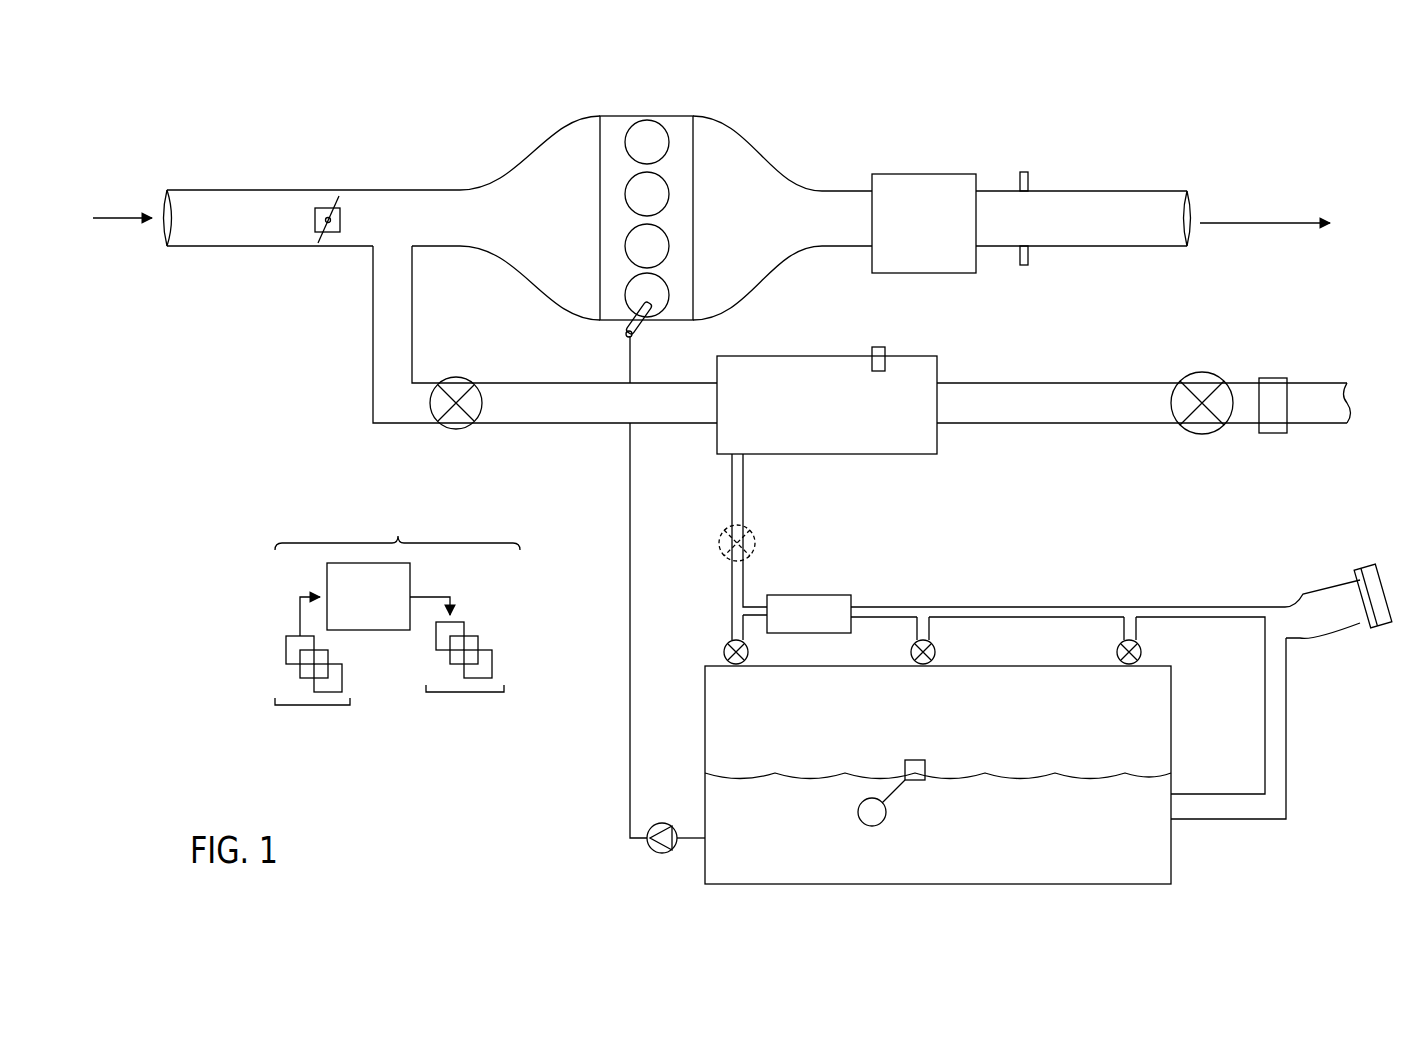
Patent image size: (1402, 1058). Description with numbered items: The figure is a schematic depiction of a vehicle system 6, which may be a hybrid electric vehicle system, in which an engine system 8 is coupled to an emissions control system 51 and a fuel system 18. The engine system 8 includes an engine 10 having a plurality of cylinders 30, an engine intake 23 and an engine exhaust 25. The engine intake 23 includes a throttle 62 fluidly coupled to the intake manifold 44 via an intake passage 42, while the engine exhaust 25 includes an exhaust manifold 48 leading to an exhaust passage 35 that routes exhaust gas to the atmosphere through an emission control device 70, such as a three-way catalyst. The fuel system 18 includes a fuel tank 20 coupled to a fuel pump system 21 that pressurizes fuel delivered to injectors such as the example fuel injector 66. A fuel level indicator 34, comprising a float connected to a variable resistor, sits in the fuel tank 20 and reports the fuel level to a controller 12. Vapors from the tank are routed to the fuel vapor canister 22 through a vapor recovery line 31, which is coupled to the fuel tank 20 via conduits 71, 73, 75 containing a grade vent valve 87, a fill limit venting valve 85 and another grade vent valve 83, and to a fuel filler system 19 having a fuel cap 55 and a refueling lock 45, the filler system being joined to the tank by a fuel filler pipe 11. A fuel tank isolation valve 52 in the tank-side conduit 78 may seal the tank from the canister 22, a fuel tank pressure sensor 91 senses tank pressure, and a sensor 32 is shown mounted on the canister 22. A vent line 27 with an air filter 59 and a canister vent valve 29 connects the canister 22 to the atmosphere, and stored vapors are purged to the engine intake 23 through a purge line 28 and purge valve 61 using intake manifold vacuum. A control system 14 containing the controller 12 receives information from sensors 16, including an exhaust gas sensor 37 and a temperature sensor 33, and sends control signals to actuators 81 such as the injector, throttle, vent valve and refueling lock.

The vehicle system 6 is at (182, 121).
The engine system 8 is at (990, 117).
The engine 10 is at (695, 204).
The fuel filler pipe 11 is at (1292, 714).
The controller 12 is at (368, 596).
The control system 14 is at (397, 521).
The sensors 16 is at (312, 674).
The fuel system 18 is at (1224, 836).
The fuel filler system 19 is at (1338, 572).
The fuel tank 20 is at (1171, 765).
The fuel pump system 21 is at (662, 823).
The fuel vapor canister 22 is at (940, 378).
The engine intake 23 is at (527, 143).
The engine exhaust 25 is at (862, 125).
The vent line 27 is at (1144, 403).
The purge line 28 is at (545, 334).
The canister vent valve 29 is at (1202, 372).
The cylinders 30 is at (667, 136).
The vapor recovery line 31 is at (1190, 607).
The temperature sensor 32 is at (876, 347).
The temperature sensor 33 is at (1019, 258).
The fuel level indicator 34 is at (918, 758).
The exhaust passage 35 is at (1140, 191).
The exhaust gas sensor 37 is at (1019, 186).
The intake passage 42 is at (363, 250).
The intake manifold 44 is at (530, 218).
The refueling lock 45 is at (1369, 627).
The exhaust manifold 48 is at (782, 218).
The emissions control system 51 is at (1331, 336).
The fuel tank isolation valve 52 is at (724, 559).
The fuel cap 55 is at (1370, 566).
The air filter 59 is at (1283, 378).
The purge valve 61 is at (456, 380).
The throttle 62 is at (342, 226).
The fuel injector 66 is at (639, 335).
The emission control device 70 is at (912, 176).
The conduit 71 is at (745, 624).
The conduit 73 is at (917, 624).
The conduit 75 is at (1123, 624).
The vent conduit 78 is at (731, 495).
The actuators 81 is at (458, 667).
The grade vent valve 83 is at (1141, 652).
The fill limit venting valve 85 is at (937, 652).
The grade vent valve 87 is at (724, 652).
The fuel tank pressure sensor 91 is at (851, 603).